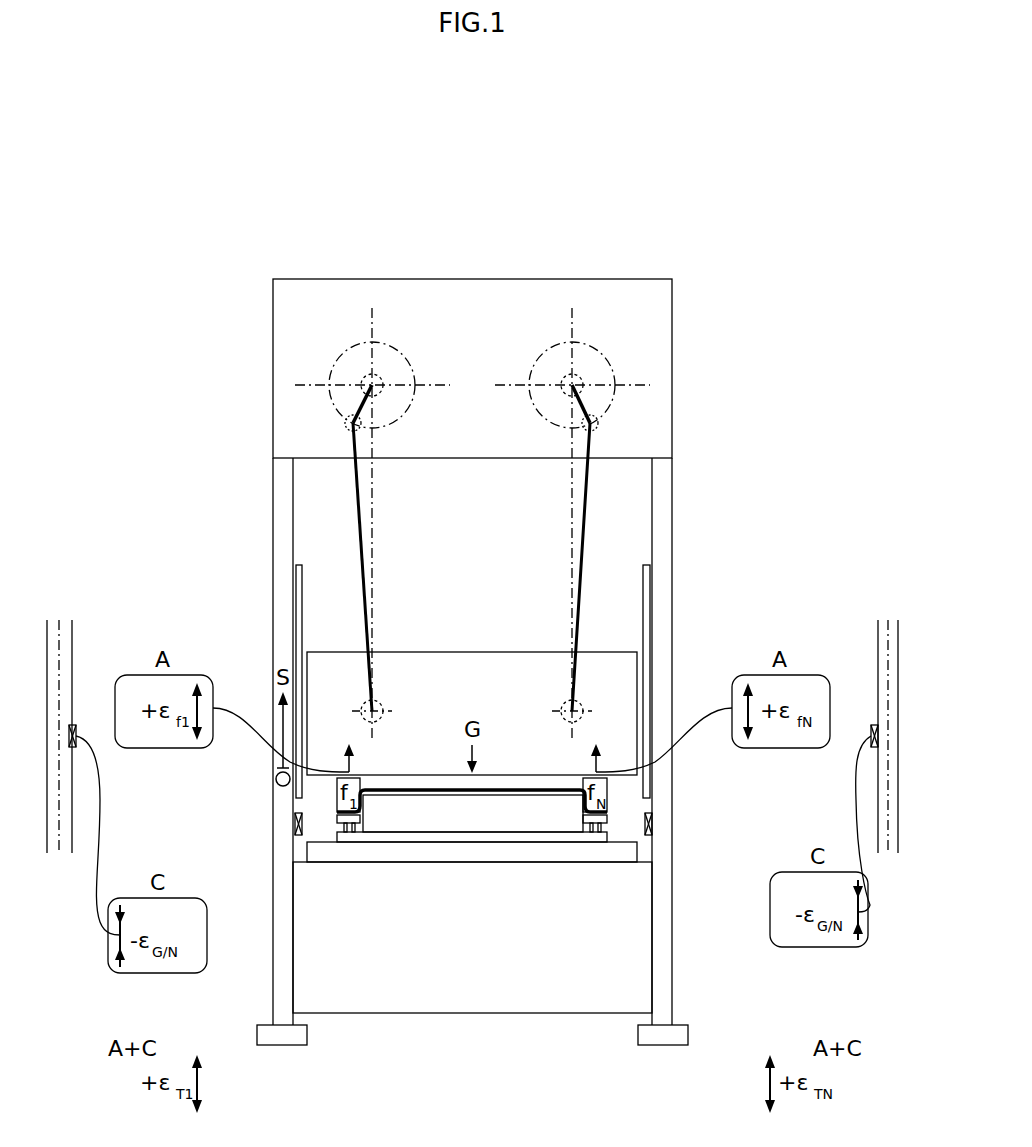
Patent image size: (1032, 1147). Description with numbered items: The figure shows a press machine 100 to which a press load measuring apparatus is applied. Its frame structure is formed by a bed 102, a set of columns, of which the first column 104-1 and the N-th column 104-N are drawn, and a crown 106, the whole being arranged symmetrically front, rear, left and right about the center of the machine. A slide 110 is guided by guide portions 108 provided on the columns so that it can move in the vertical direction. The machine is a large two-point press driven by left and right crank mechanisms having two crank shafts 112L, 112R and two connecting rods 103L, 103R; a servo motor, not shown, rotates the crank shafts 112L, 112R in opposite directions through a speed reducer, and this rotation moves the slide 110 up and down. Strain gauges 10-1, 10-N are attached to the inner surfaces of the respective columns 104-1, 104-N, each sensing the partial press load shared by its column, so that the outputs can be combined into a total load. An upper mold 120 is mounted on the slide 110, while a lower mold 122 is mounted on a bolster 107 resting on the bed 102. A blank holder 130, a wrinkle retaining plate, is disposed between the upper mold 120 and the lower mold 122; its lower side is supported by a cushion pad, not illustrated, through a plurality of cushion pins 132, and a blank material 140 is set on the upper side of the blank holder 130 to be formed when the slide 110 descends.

The press machine 100 is at (628, 227).
The bed 102 is at (627, 943).
The left connecting rod 103L is at (345, 532).
The right connecting rod 103R is at (598, 532).
The column 104-1 is at (275, 518).
The column 104-N is at (672, 517).
The crown 106 is at (540, 283).
The bolster 107 is at (630, 848).
The guide portions 108 is at (302, 622).
The slide 110 is at (475, 658).
The left crank shaft 112L is at (353, 423).
The right crank shaft 112R is at (590, 423).
The upper mold 120 is at (608, 787).
The lower mold 122 is at (433, 822).
The blank holder 130 is at (608, 815).
The cushion pins 132 is at (347, 826).
The blank material 140 is at (492, 795).
The strain gauge 10-1 is at (296, 825).
The strain gauge 10-N is at (652, 823).